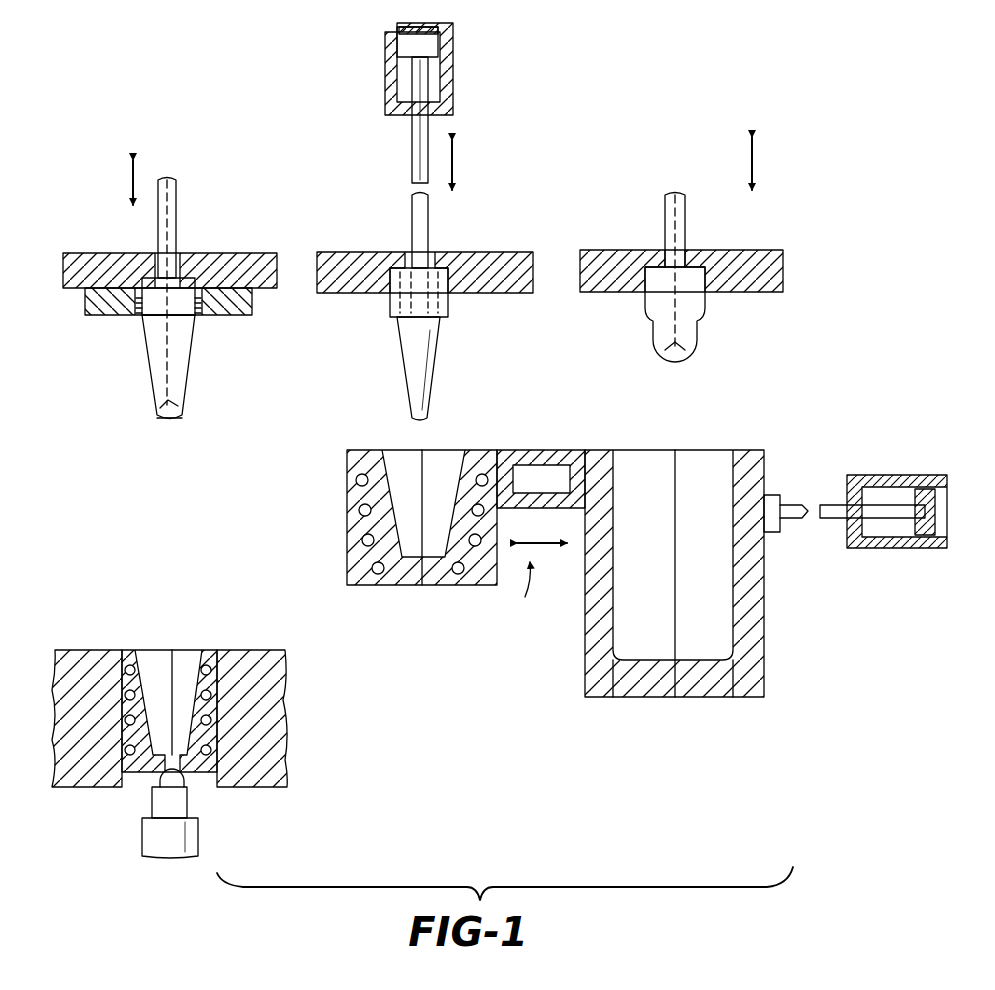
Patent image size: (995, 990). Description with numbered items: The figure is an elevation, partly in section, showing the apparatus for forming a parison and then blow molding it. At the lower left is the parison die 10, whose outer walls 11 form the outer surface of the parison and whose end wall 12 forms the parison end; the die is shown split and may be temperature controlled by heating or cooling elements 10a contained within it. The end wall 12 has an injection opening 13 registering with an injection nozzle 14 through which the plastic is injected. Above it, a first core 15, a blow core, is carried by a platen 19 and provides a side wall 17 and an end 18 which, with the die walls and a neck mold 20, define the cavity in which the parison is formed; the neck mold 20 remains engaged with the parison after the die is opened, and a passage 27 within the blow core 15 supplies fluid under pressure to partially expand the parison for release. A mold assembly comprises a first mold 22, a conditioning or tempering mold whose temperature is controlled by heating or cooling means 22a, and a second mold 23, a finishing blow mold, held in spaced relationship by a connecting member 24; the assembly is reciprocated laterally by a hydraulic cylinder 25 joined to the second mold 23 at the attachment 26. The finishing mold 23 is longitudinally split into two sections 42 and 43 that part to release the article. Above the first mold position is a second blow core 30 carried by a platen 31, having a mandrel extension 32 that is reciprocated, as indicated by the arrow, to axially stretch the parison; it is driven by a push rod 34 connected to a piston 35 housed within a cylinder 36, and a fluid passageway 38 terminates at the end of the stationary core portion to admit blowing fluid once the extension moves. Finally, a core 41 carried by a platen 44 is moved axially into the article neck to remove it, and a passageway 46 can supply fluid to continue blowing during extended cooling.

The parison die 10 is at (122, 735).
The heating or cooling elements 10a is at (125, 670).
The outer walls 11 is at (195, 672).
The end wall 12 is at (150, 775).
The injection opening 13 is at (200, 775).
The injection nozzle 14 is at (145, 845).
The first core 15 is at (150, 362).
The side wall 17 is at (183, 402).
The end 18 is at (169, 422).
The platen 19 is at (240, 258).
The neck mold 20 is at (97, 318).
The first mold 22 is at (355, 580).
The heating or cooling means 22a is at (363, 540).
The second mold 23 is at (766, 682).
The connecting member 24 is at (540, 450).
The hydraulic cylinder 25 is at (890, 548).
The attachment 26 is at (775, 535).
The passage 27 is at (178, 207).
The second blow core 30 is at (428, 382).
The platen 31 is at (340, 256).
The mandrel extension 32 is at (430, 236).
The push rod 34 is at (430, 132).
The piston 35 is at (440, 44).
The cylinder 36 is at (455, 86).
The fluid passageway 38 is at (400, 262).
The core 41 is at (695, 352).
The section 42 is at (620, 690).
The section 43 is at (725, 690).
The platen 44 is at (760, 250).
The passageway 46 is at (687, 222).